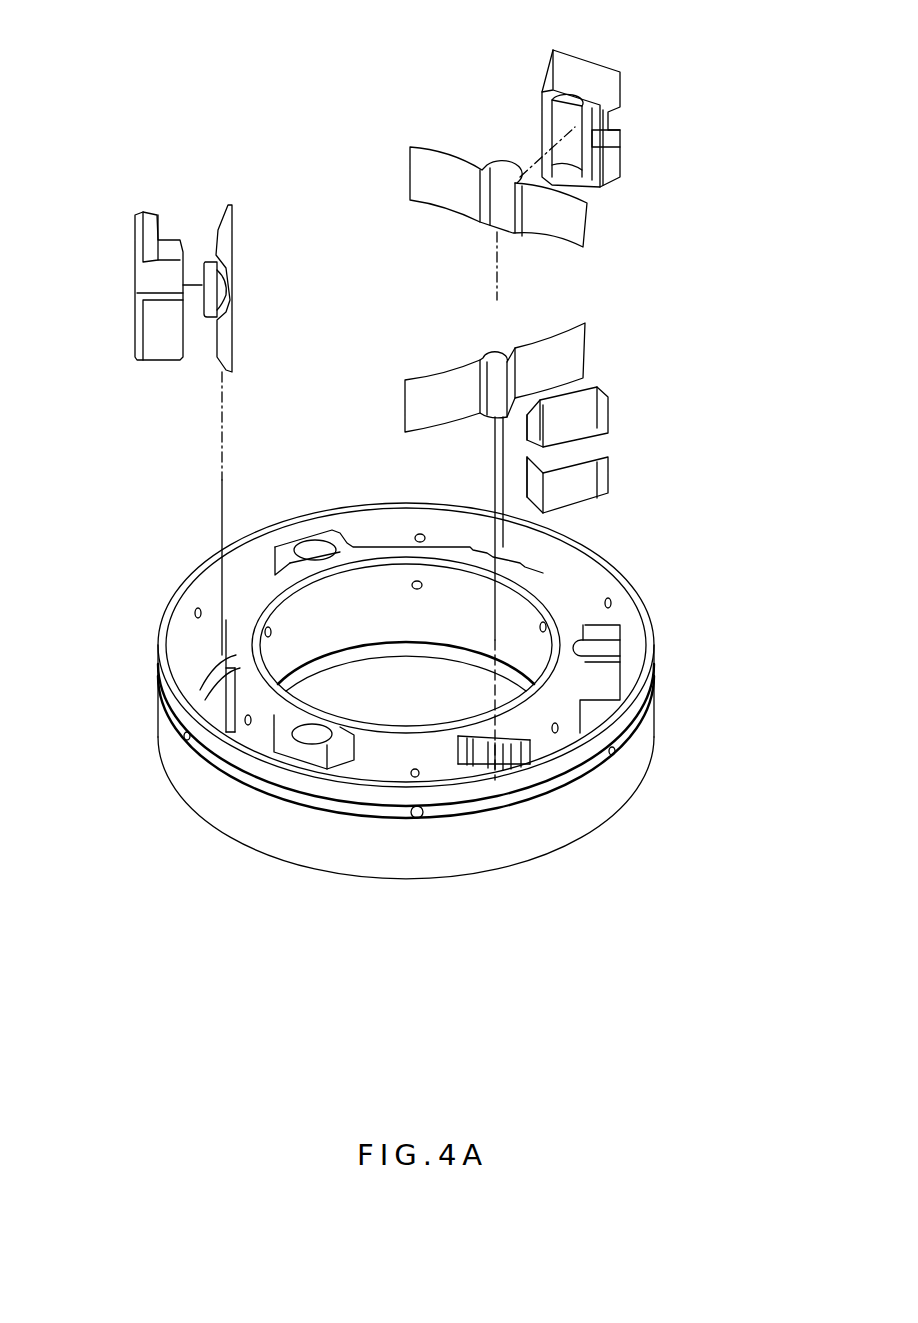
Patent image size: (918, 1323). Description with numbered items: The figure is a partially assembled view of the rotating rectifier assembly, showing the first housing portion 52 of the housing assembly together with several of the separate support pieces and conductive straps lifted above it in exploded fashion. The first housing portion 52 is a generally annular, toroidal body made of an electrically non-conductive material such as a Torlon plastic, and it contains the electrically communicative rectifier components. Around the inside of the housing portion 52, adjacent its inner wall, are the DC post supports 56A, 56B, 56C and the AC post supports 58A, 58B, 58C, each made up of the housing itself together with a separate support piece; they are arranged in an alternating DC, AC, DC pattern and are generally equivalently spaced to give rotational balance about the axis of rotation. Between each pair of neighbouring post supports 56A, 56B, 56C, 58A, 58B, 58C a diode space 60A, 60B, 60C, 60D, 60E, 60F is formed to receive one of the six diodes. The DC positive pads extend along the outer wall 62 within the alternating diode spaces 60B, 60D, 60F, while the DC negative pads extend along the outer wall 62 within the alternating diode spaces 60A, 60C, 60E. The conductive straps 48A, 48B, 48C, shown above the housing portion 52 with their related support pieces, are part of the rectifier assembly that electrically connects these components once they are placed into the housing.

The conductive strap 48A is at (222, 232).
The conductive strap 48B is at (445, 160).
The conductive strap 48C is at (588, 343).
The first housing portion 52 is at (446, 522).
The DC post support 56A is at (352, 748).
The DC post support 56B is at (343, 525).
The DC post support 56C is at (560, 727).
The AC post support 58A is at (130, 272).
The AC post support 58B is at (627, 92).
The AC post support 58C is at (609, 473).
The diode space 60A is at (228, 683).
The diode space 60B is at (200, 607).
The diode space 60C is at (420, 533).
The diode space 60D is at (599, 598).
The diode space 60E is at (598, 687).
The diode space 60F is at (498, 772).
The outer wall 62 is at (247, 565).